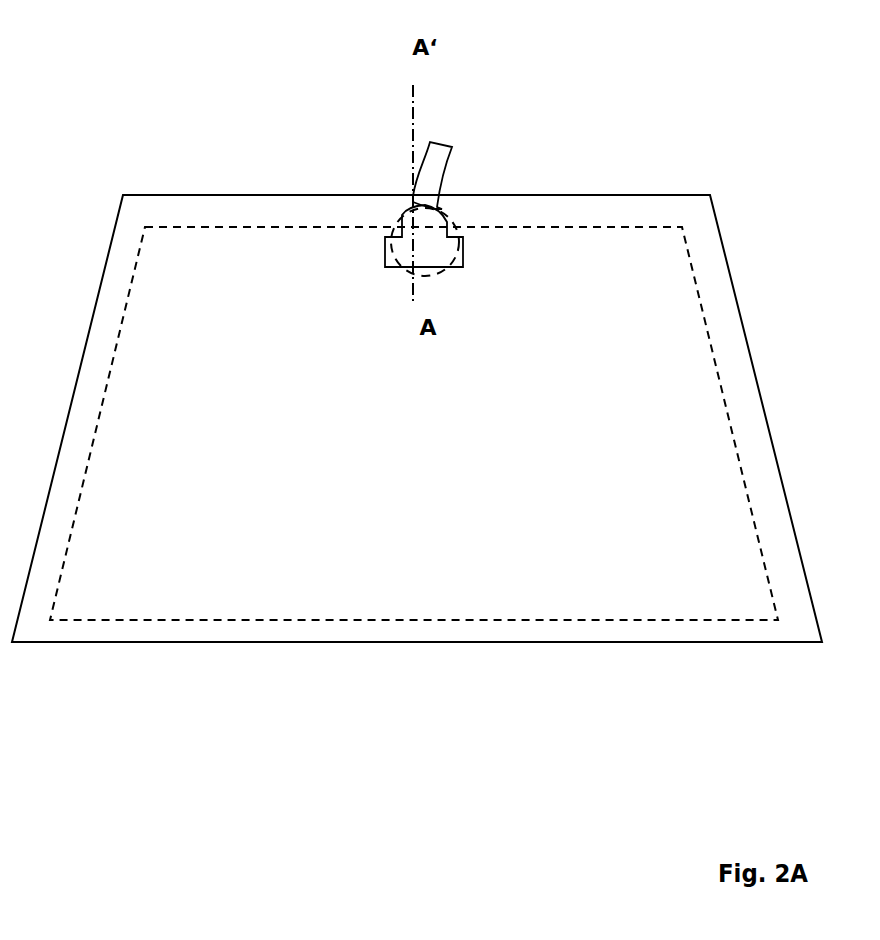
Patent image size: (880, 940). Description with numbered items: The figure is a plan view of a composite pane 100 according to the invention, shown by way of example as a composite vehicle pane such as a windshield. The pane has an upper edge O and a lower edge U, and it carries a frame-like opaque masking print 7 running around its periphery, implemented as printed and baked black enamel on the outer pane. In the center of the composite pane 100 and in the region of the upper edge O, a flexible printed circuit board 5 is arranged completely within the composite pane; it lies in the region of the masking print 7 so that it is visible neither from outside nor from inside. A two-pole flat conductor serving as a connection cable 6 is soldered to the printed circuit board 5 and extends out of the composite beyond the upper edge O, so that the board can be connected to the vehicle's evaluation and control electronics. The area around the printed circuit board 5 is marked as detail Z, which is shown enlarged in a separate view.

The composite pane 100 is at (124, 143).
The masking print 7 is at (711, 212).
The flexible printed circuit board 5 is at (455, 220).
The connection cable 6 is at (442, 155).
The detail Z is at (402, 222).
The upper edge O is at (628, 182).
The lower edge U is at (628, 657).